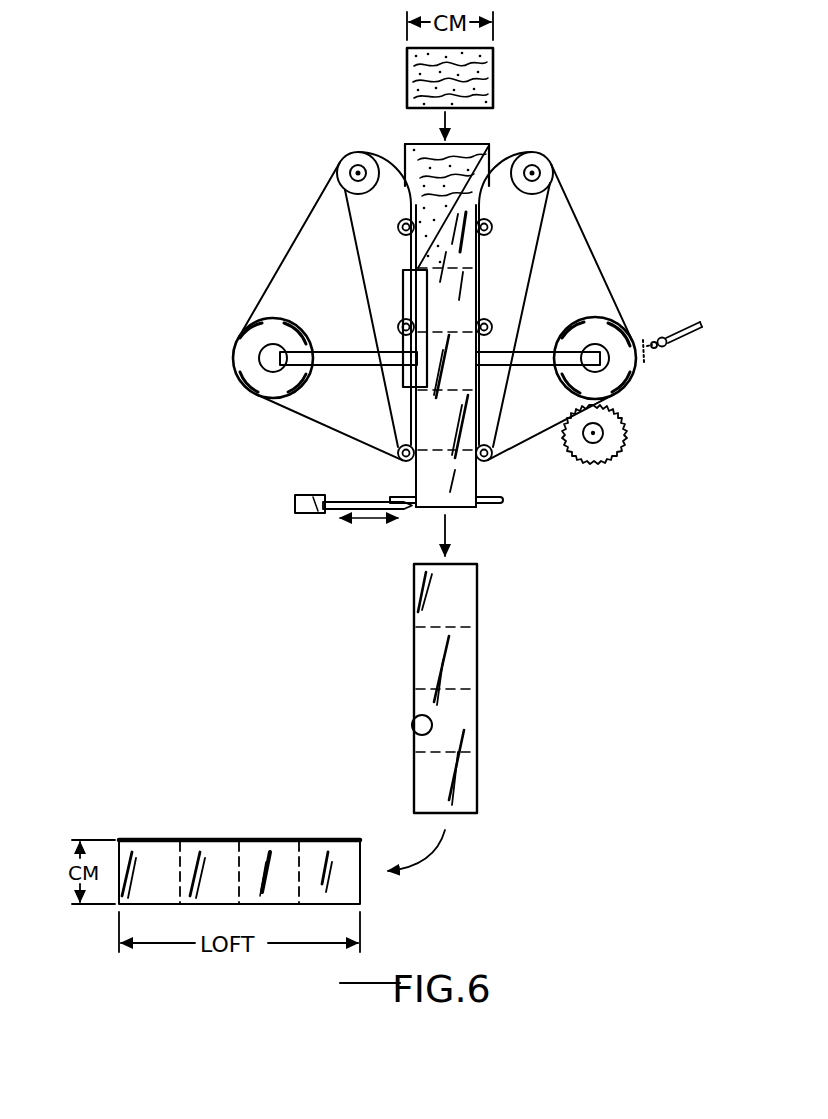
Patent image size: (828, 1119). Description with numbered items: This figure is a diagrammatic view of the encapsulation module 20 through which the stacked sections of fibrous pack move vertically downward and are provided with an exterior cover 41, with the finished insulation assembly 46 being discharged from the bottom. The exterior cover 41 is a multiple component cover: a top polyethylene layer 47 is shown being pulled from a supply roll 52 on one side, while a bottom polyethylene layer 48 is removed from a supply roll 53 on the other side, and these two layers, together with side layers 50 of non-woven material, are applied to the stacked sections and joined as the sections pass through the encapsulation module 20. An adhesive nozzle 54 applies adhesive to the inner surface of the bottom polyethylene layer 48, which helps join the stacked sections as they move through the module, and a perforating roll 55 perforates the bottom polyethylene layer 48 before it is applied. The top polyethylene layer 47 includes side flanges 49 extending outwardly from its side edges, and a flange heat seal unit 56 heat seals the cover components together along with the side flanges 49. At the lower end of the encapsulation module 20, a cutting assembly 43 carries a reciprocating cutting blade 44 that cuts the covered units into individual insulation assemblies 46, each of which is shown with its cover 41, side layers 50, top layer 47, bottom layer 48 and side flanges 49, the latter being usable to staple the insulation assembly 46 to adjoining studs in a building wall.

The encapsulation module 20 is at (490, 282).
The exterior cover 41 is at (480, 490).
The cutting assembly 43 is at (300, 512).
The reciprocating cutting blade 44 is at (372, 470).
The insulation assembly 46 is at (482, 707).
The top layer 47 is at (298, 232).
The bottom layer 48 is at (612, 284).
The side flanges 49 is at (414, 718).
The side layers 50 is at (481, 143).
The supply roll 52 is at (255, 391).
The supply roll 53 is at (630, 385).
The adhesive nozzle 54 is at (662, 337).
The perforating roll 55 is at (604, 453).
The flange heat seal unit 56 is at (404, 306).